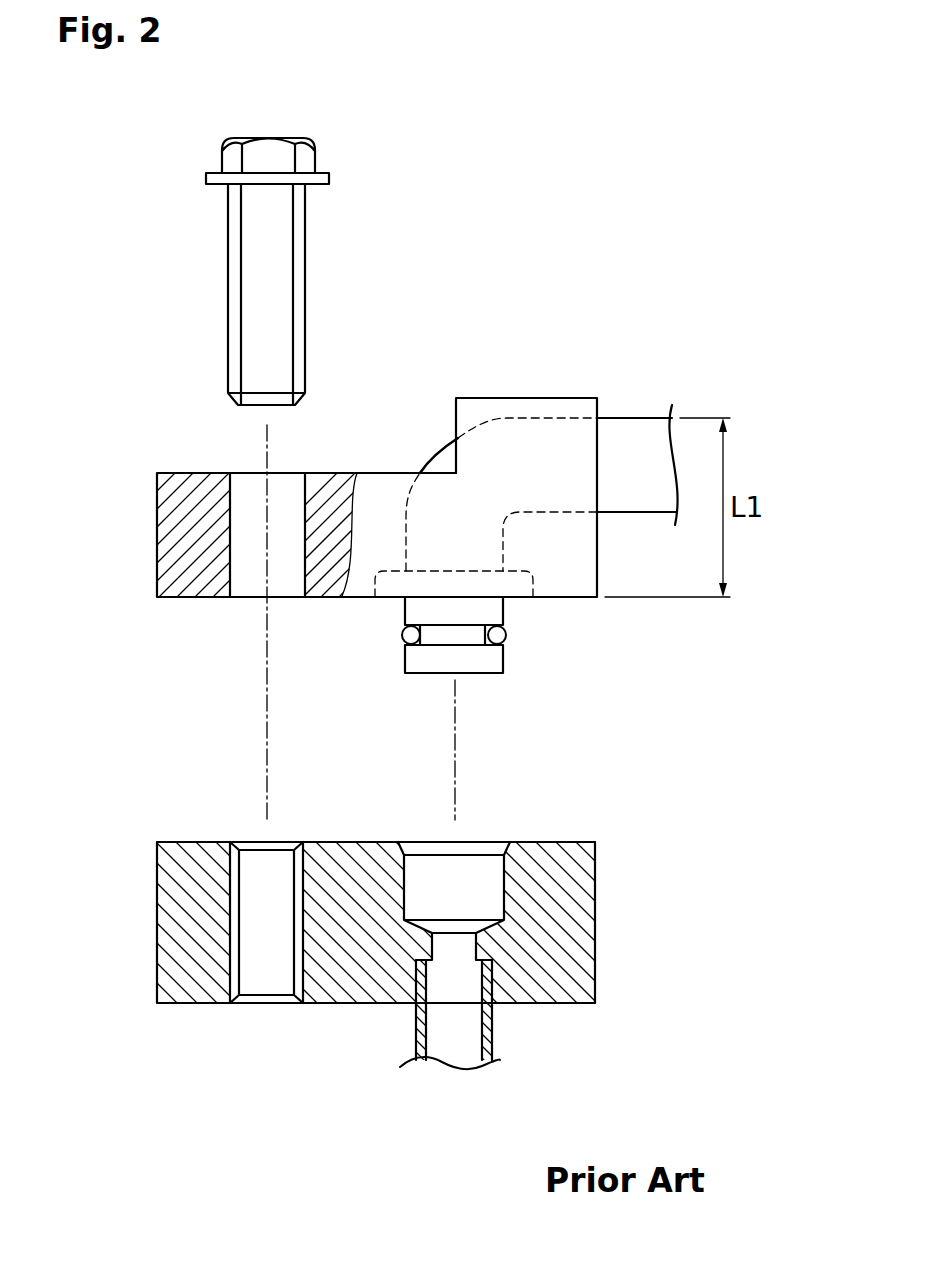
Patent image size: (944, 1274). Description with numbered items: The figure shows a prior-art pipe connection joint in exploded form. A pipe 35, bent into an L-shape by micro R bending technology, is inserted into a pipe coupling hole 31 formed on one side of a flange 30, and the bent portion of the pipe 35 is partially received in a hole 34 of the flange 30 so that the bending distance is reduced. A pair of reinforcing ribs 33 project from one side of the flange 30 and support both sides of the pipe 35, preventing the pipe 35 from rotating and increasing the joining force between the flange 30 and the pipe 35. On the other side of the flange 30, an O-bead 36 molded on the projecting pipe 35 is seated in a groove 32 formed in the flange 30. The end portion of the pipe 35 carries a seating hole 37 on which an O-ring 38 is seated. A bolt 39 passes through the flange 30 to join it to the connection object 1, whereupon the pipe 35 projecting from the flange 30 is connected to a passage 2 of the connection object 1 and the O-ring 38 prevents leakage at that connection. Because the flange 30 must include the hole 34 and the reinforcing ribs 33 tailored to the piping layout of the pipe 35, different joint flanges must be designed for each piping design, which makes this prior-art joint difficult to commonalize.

The connection object 1 is at (558, 937).
The passage 2 is at (505, 890).
The flange 30 is at (190, 541).
The pipe coupling hole 31 is at (402, 494).
The groove 32 is at (375, 583).
The reinforcing ribs 33 is at (472, 405).
The hole 34 is at (523, 514).
The pipe 35 is at (630, 425).
The O-bead 36 is at (503, 583).
The seating hole 37 is at (477, 640).
The O-ring 38 is at (505, 637).
The bolt 39 is at (258, 238).